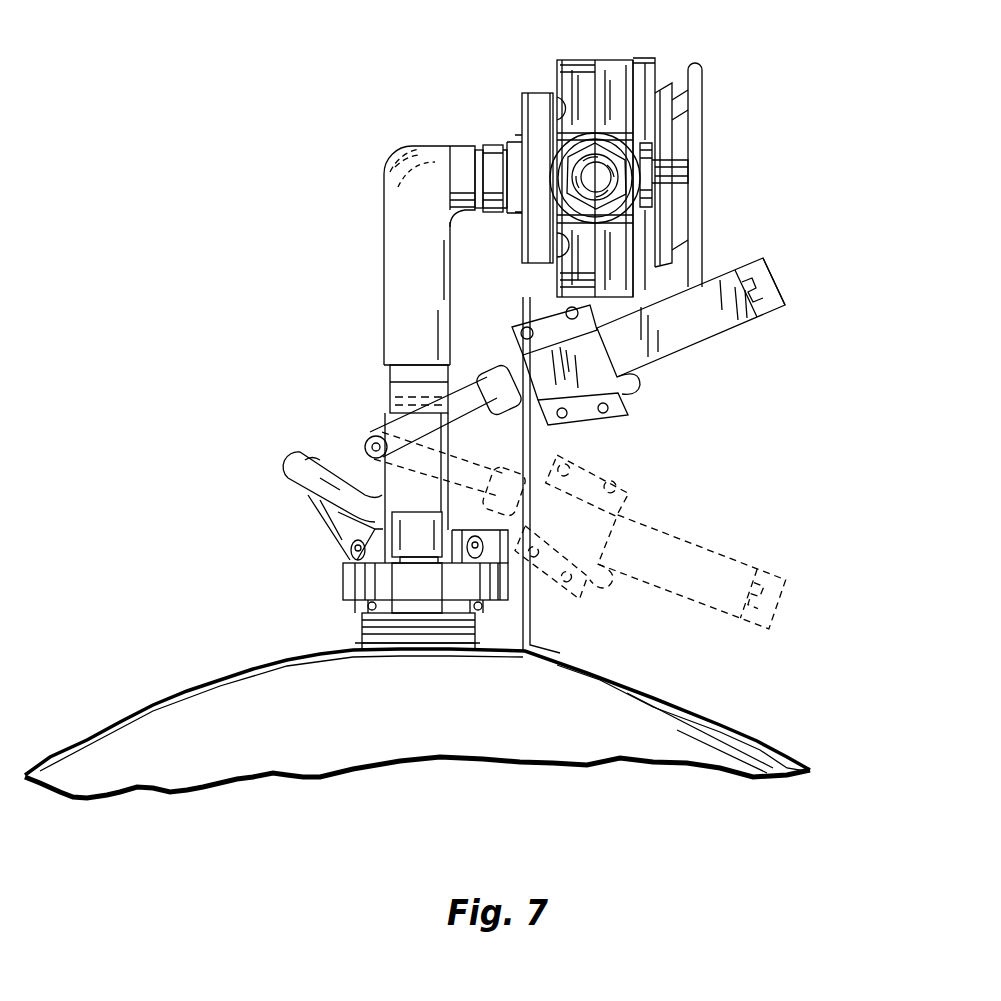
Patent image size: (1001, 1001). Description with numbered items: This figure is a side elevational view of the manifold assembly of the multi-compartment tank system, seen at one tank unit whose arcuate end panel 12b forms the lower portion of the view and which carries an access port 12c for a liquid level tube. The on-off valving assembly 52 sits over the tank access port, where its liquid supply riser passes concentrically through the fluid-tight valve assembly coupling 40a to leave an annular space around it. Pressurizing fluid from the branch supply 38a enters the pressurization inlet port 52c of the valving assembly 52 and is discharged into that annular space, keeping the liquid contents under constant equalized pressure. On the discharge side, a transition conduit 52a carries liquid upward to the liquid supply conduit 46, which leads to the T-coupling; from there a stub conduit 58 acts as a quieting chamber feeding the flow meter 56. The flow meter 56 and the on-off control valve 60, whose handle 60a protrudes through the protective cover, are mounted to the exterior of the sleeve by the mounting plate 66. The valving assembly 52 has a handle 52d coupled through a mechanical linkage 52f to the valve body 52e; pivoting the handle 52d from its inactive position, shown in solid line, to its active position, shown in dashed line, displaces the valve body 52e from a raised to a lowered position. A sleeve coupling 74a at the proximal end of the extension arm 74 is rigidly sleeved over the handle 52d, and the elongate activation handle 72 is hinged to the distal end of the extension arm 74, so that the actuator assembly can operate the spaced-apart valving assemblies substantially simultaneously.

The end panel 12b is at (340, 728).
The access port 12c is at (432, 635).
The branch supply 38a is at (338, 512).
The valve assembly coupling 40a is at (362, 614).
The liquid supply conduit 46 is at (388, 161).
The on-off valving assembly 52 is at (343, 583).
The transition conduit 52a is at (387, 283).
The pressurization inlet port 52c is at (293, 474).
The handle 52d is at (503, 372).
The valve body 52e is at (392, 413).
The mechanical linkage 52f is at (352, 549).
The flow meter 56 is at (660, 97).
The stub conduit 58 is at (492, 145).
The on-off control valve 60 is at (583, 145).
The handle 60a is at (703, 73).
The mounting plate 66 is at (530, 634).
The activation handle 72 is at (764, 264).
The extension arm 74 is at (697, 335).
The sleeve coupling 74a is at (643, 384).